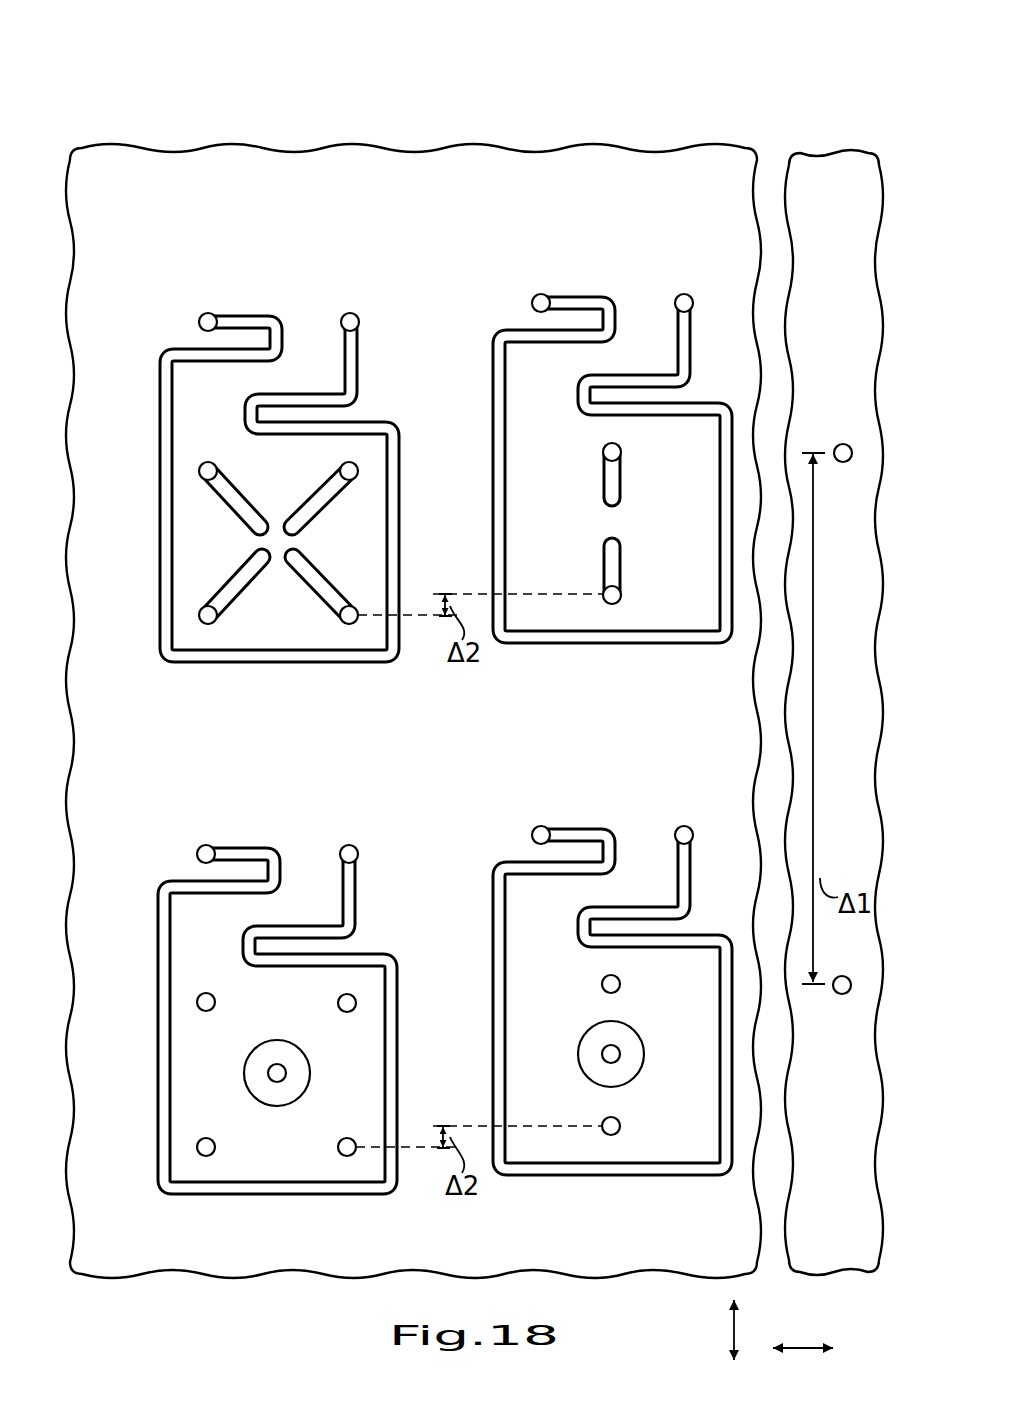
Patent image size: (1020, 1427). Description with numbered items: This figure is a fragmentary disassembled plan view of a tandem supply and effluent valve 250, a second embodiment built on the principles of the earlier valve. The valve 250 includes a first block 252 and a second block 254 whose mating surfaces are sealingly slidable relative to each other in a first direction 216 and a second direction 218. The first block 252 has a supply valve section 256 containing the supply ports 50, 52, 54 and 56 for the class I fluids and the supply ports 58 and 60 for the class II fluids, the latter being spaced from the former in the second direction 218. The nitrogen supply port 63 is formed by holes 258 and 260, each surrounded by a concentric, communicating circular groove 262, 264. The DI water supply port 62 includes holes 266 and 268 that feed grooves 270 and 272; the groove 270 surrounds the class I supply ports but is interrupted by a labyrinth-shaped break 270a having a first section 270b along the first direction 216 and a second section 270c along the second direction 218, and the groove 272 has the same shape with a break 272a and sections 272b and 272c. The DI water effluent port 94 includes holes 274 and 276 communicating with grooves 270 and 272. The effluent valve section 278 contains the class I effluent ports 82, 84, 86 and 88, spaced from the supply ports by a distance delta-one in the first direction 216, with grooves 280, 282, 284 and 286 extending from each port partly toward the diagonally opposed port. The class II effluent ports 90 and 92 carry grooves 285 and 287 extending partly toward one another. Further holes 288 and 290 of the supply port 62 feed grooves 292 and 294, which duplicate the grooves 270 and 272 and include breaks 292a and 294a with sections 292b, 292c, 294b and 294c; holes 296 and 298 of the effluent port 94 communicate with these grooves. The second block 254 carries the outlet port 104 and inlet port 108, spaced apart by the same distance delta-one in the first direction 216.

The valve 250 is at (383, 75).
The first block 252 is at (511, 136).
The second block 254 is at (834, 156).
The supply valve section 256 is at (194, 1282).
The effluent valve section 278 is at (213, 128).
The DI water supply port 62 is at (218, 258).
The DI water effluent port 94 is at (355, 258).
The hole 288 is at (208, 313).
The groove 292 is at (235, 663).
The break 292a is at (318, 325).
The first section 292b is at (305, 353).
The second section 292c is at (256, 377).
The hole 296 is at (350, 313).
The hole 290 is at (541, 294).
The groove 294 is at (623, 645).
The break 294a is at (655, 293).
The section 294b is at (638, 330).
The section 294c is at (590, 358).
The hole 298 is at (683, 294).
The effluent port 82 is at (199, 468).
The effluent port 84 is at (359, 468).
The effluent port 86 is at (199, 619).
The effluent port 88 is at (350, 625).
The groove 280 is at (225, 497).
The groove 282 is at (333, 496).
The groove 284 is at (226, 584).
The groove 286 is at (333, 591).
The effluent port 90 is at (603, 450).
The effluent port 92 is at (621, 595).
The groove 285 is at (605, 487).
The groove 287 is at (603, 563).
The hole 266 is at (206, 845).
The groove 270 is at (232, 1196).
The break 270a is at (317, 847).
The first section 270b is at (300, 883).
The second section 270c is at (253, 909).
The hole 274 is at (349, 845).
The hole 268 is at (541, 826).
The groove 272 is at (577, 1177).
The break 272a is at (653, 827).
The section 272b is at (637, 863).
The section 272c is at (585, 892).
The hole 276 is at (683, 826).
The supply port 50 is at (198, 1002).
The supply port 52 is at (355, 1003).
The supply port 54 is at (198, 1146).
The supply port 56 is at (348, 1157).
The circular groove 262 is at (250, 1042).
The hole 258 is at (268, 1080).
The supply port 63 is at (330, 1068).
The supply port 58 is at (620, 982).
The supply port 60 is at (620, 1125).
The circular groove 264 is at (583, 1042).
The hole 260 is at (620, 1052).
The inlet port 108 is at (843, 444).
The outlet port 104 is at (842, 994).
The first direction 216 is at (734, 1332).
The second direction 218 is at (804, 1348).